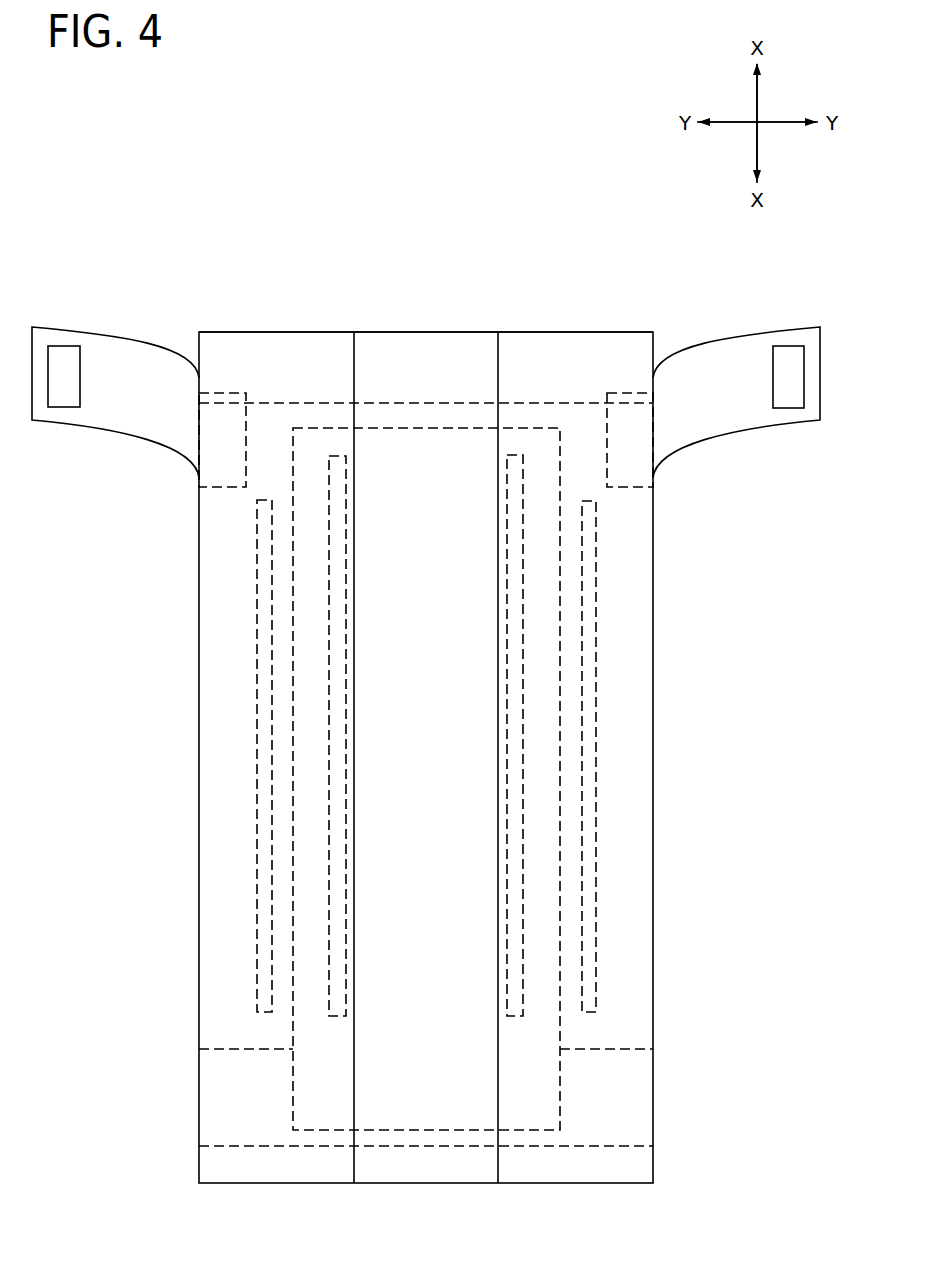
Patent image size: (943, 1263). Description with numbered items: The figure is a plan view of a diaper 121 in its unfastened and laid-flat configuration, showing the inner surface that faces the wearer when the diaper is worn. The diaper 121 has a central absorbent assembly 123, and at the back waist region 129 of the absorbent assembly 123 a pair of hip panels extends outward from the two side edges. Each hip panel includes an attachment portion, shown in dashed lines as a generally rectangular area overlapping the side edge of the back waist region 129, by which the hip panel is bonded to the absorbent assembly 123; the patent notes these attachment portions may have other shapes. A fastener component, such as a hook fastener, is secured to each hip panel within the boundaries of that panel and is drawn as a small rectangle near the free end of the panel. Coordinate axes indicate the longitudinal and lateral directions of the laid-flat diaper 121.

The diaper 121 is at (212, 204).
The absorbent assembly 123 is at (192, 780).
The back waist region 129 is at (325, 352).